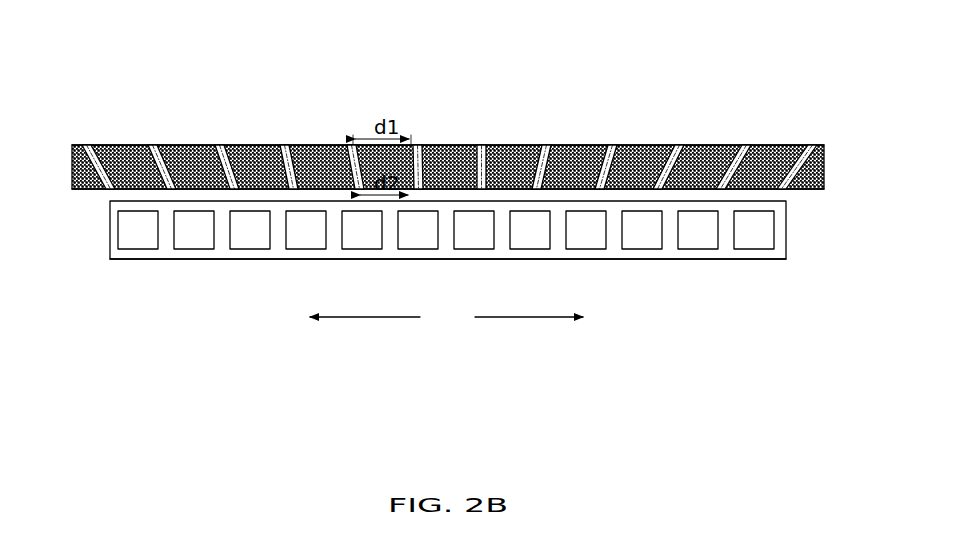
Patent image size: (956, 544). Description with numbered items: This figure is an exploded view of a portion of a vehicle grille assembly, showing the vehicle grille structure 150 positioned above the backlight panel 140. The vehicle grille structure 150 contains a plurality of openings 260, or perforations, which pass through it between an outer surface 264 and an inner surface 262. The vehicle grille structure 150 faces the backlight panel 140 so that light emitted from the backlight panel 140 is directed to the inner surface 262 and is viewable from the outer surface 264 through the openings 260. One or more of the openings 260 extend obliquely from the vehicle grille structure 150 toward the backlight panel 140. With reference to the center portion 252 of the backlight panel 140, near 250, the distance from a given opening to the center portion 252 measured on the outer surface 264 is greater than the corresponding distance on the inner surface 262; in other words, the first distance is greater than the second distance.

The vehicle grille structure 150 is at (73, 92).
The outer surface 264 is at (73, 142).
The inner surface 262 is at (73, 193).
The openings 260 is at (86, 142).
The backlight panel 140 is at (158, 260).
The center portion 252 is at (417, 260).
The region near the center portion 250 is at (475, 317).